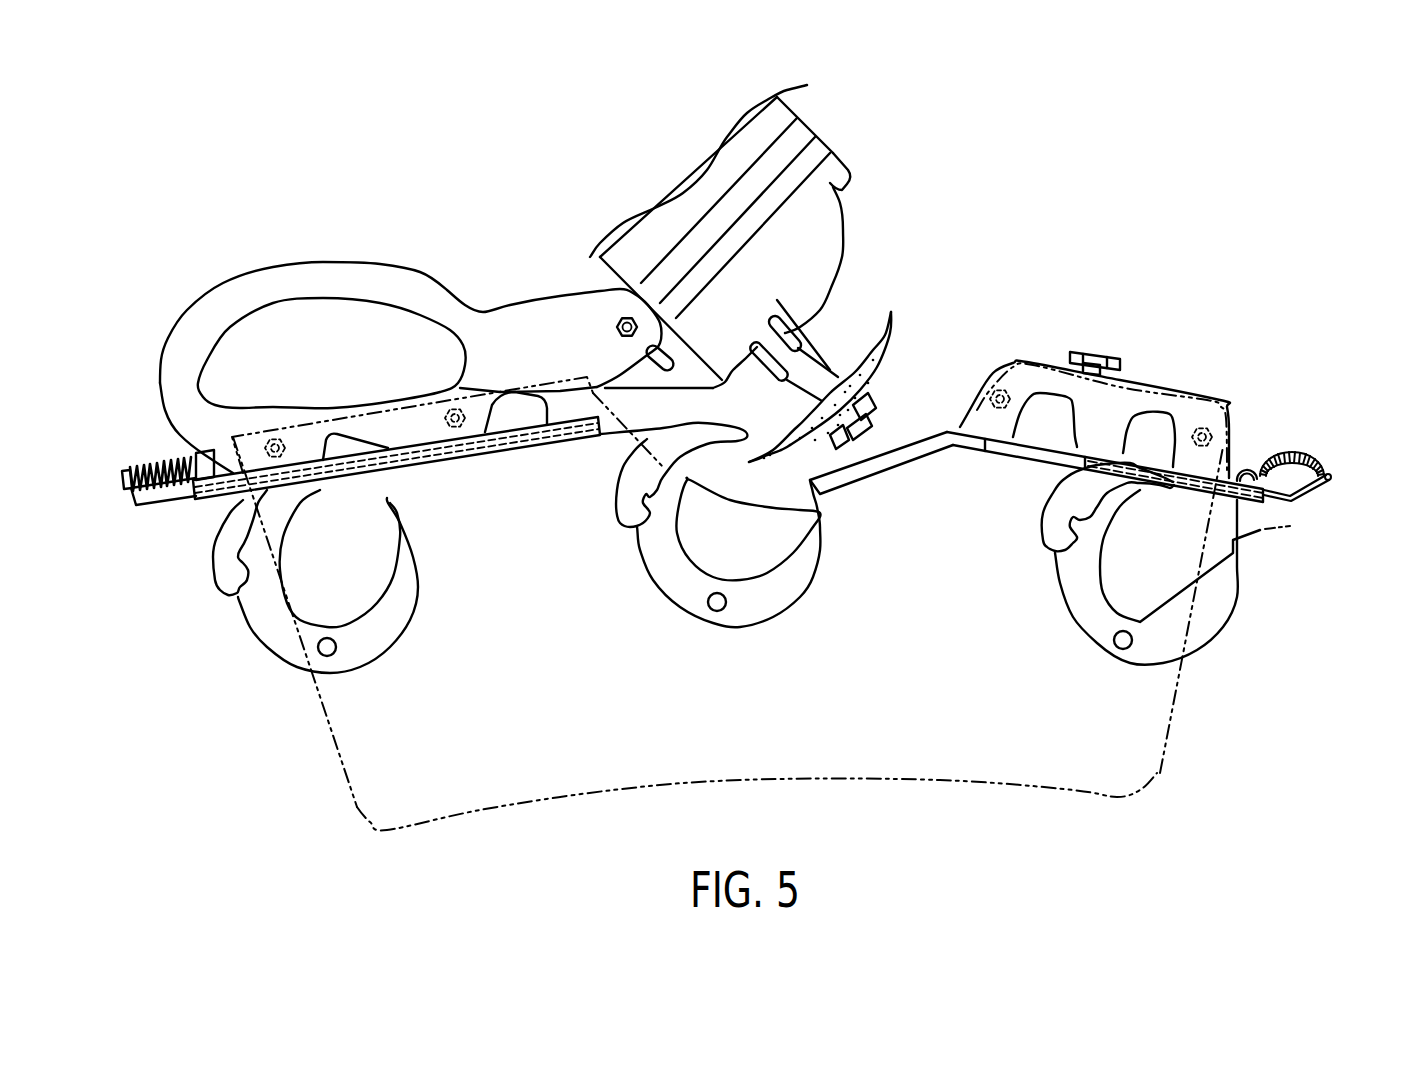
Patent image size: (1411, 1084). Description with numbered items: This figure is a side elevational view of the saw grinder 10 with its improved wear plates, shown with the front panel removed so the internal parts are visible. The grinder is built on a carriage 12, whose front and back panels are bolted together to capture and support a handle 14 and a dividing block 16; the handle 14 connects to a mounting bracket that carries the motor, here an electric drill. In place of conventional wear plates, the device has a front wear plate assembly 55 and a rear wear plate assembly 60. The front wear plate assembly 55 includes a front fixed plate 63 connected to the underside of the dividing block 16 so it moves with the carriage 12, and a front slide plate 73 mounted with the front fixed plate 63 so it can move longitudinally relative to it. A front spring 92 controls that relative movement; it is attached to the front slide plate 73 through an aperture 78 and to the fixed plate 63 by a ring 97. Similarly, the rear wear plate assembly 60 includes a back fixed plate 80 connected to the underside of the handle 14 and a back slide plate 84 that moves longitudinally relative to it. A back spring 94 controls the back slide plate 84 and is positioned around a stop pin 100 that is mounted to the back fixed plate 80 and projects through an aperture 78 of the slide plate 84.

The cutting tool assembly 10 is at (968, 216).
The carriage 12 is at (750, 548).
The handle 14 is at (510, 328).
The dividing block 16 is at (1059, 362).
The front wear plate assembly 55 is at (1240, 510).
The rear wear plate assembly 60 is at (210, 520).
The front fixed plate 63 is at (851, 488).
The front slide plate 73 is at (1305, 494).
The aperture 78 is at (1328, 476).
The back fixed plate 80 is at (481, 447).
The back slide plate 84 is at (156, 503).
The front spring 92 is at (1290, 452).
The back spring 94 is at (158, 463).
The ring 97 is at (1238, 467).
The stop pin 100 is at (122, 482).